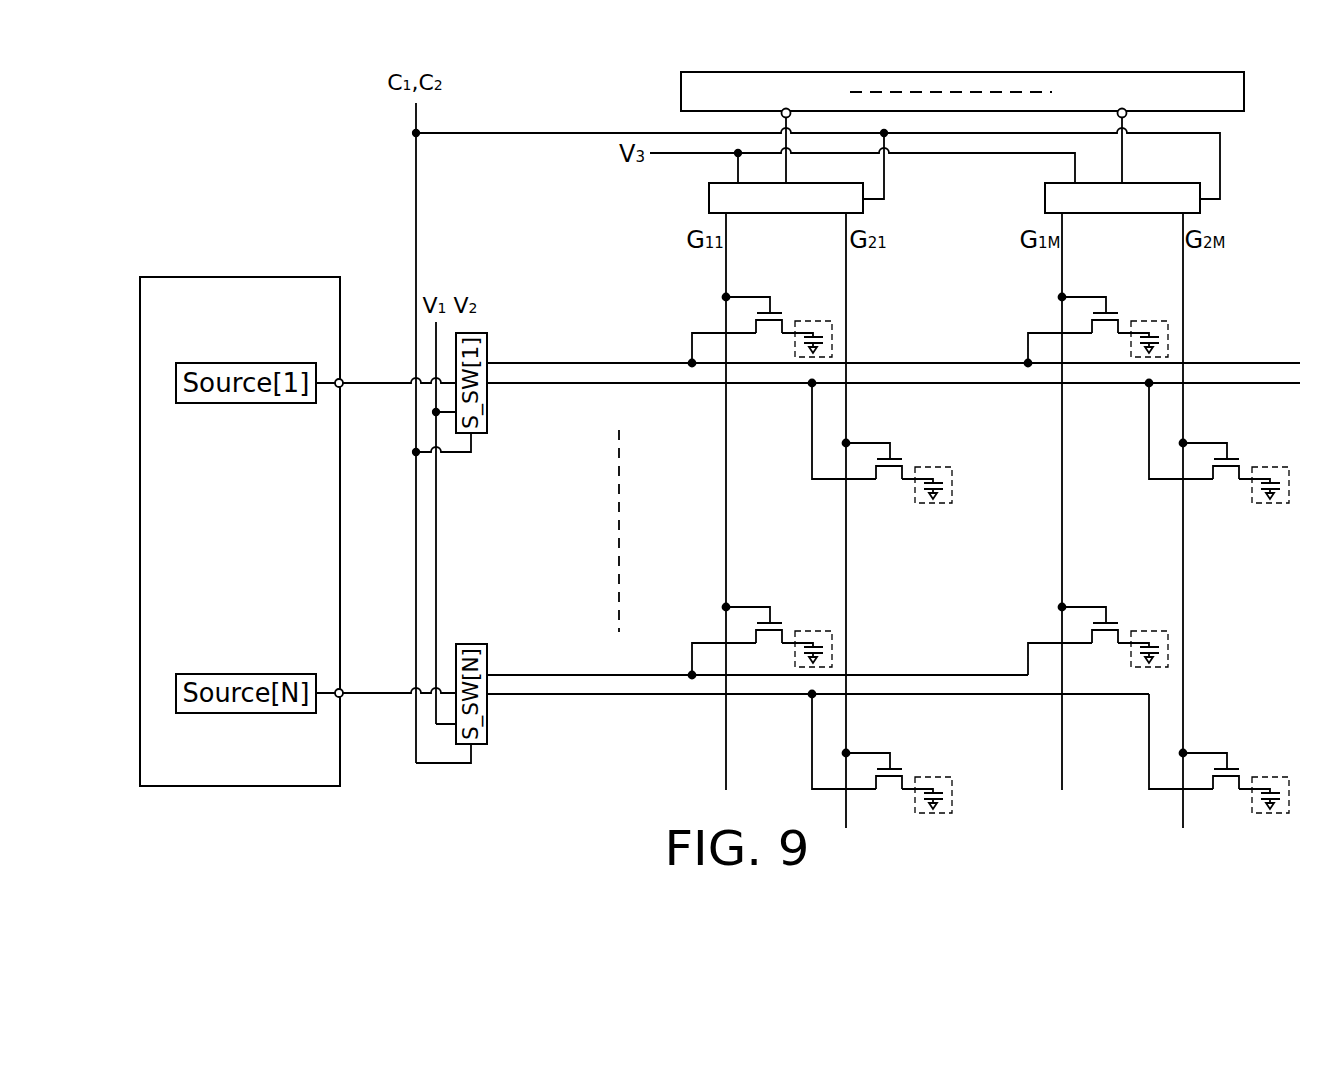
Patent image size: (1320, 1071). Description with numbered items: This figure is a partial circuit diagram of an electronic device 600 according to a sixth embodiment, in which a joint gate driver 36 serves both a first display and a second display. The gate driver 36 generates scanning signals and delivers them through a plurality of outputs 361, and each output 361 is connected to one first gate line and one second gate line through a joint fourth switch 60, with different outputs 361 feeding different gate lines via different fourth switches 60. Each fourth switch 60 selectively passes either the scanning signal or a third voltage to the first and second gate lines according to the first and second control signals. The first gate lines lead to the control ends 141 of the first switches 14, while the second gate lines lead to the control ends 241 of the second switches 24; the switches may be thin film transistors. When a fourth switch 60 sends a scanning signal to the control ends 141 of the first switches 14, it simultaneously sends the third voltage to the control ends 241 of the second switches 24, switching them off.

The electronic device 600 is at (248, 134).
The gate driver 36 is at (938, 72).
The output 361 is at (1125, 116).
The fourth switch 60 is at (709, 200).
The first switch 14 is at (929, 486).
The control end 141 is at (748, 300).
The second switch 24 is at (1049, 601).
The control end 241 is at (867, 442).